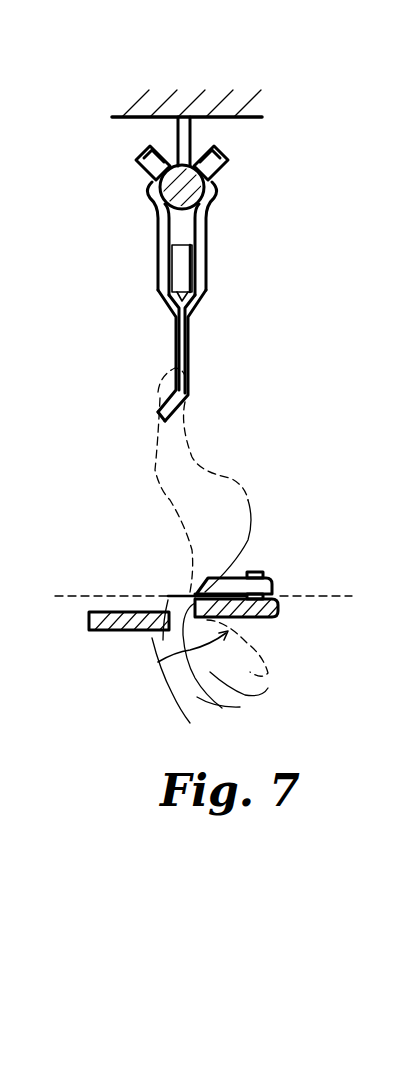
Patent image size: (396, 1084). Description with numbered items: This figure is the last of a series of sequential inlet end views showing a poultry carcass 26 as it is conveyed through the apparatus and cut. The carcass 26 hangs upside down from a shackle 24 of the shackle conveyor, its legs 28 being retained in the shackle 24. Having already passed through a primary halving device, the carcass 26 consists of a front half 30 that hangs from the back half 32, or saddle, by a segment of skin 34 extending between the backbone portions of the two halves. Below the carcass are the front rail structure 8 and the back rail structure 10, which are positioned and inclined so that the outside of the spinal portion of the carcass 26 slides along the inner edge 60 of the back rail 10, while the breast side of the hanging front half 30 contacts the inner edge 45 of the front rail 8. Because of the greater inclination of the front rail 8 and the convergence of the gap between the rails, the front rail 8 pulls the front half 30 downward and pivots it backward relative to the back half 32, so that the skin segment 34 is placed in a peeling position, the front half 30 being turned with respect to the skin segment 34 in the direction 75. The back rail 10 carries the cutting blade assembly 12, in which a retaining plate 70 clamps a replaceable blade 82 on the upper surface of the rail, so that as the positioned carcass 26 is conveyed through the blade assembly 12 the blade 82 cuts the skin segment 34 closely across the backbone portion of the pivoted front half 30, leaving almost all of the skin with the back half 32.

The front rail structure 8 is at (95, 610).
The back rail structure 10 is at (248, 618).
The cutting blade assembly 12 is at (258, 586).
The shackle 24 is at (198, 277).
The poultry carcass 26 is at (208, 518).
The legs 28 is at (180, 447).
The front half 30 is at (183, 697).
The back half 32 is at (173, 502).
The segment of skin 34 is at (200, 578).
The inner edge of front rail 45 is at (158, 662).
The inner edge of back rail 60 is at (222, 703).
The retaining plate 70 is at (262, 580).
The direction 75 is at (212, 647).
The replaceable blade 82 is at (145, 595).